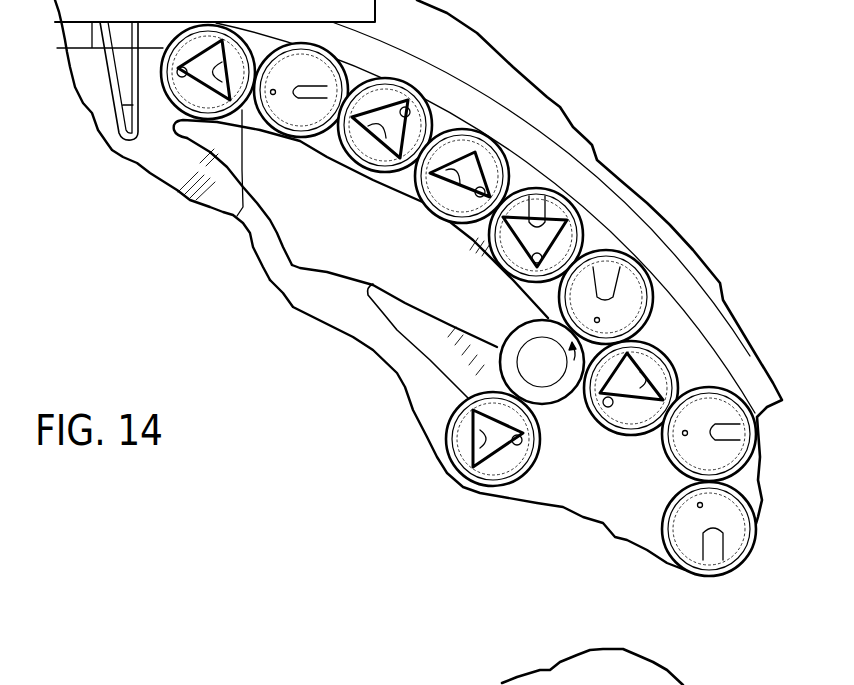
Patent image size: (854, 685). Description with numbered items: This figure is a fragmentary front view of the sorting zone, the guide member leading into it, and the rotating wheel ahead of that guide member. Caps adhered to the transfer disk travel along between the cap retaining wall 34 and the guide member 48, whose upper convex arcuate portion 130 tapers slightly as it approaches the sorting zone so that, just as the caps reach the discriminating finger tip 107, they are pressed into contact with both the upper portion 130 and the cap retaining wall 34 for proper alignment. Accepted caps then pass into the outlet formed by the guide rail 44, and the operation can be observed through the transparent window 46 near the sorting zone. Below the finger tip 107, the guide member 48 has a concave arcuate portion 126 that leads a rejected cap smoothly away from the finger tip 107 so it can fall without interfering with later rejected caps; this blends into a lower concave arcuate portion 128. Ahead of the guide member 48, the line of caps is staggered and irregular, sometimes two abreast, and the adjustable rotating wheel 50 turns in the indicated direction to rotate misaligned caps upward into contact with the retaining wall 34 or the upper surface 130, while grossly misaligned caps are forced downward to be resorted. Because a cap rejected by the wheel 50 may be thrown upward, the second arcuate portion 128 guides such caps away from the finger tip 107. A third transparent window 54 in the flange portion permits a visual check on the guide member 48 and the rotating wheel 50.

The cap retaining wall 34 is at (590, 140).
The guide rail 44 is at (198, 17).
The transparent window 46 is at (163, 162).
The guide member 48 is at (291, 282).
The adjustable rotating wheel 50 is at (570, 407).
The third transparent window 54 is at (430, 378).
The discriminating finger tip 107 is at (110, 128).
The concave arcuate portion 126 is at (277, 222).
The lower concave arcuate portion 128 is at (340, 277).
The upper convex arcuate portion 130 is at (433, 115).